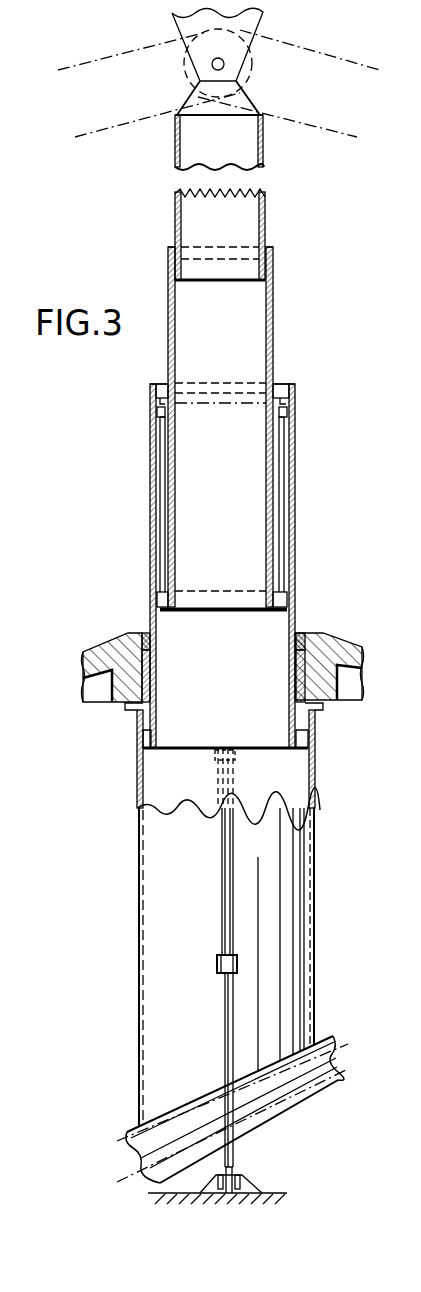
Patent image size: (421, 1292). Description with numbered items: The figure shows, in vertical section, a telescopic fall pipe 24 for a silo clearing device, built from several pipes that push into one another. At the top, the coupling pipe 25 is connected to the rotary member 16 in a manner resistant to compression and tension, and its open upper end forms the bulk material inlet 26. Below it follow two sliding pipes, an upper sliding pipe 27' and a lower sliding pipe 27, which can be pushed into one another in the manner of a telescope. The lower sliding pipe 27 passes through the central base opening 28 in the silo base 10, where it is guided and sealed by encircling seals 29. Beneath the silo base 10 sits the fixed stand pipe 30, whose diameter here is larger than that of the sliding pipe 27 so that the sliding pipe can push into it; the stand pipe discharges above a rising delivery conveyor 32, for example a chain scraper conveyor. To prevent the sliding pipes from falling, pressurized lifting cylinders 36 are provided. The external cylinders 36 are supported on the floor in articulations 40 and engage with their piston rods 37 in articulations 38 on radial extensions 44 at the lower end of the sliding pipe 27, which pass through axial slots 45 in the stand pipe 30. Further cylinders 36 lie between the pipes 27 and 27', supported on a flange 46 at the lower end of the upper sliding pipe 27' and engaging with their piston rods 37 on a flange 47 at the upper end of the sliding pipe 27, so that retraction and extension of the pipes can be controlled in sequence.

The silo base 10 is at (348, 652).
The rotary member 16 is at (252, 25).
The telescopic fall pipe 24 is at (283, 318).
The coupling pipe 25 is at (250, 216).
The bulk material inlet 26 is at (222, 116).
The sliding pipe 27 is at (240, 481).
The upper sliding pipe 27' is at (236, 538).
The base opening 28 is at (140, 655).
The encircling seals 29 is at (148, 630).
The stand pipe 30 is at (295, 903).
The delivery conveyor 32 is at (290, 1080).
The hydraulic lifting cylinders 36 is at (162, 470).
The piston rods 37 is at (157, 414).
The articulations 38 is at (222, 760).
The articulations 40 is at (240, 1175).
The radial extensions 44 is at (222, 748).
The axial slots 45 is at (222, 908).
The flange 46 is at (282, 600).
The flange 47 is at (283, 390).